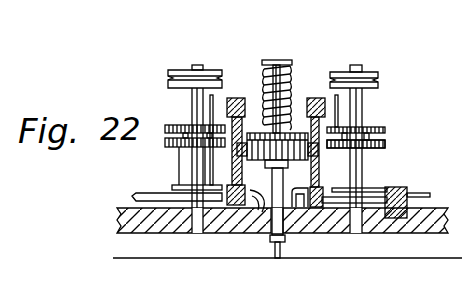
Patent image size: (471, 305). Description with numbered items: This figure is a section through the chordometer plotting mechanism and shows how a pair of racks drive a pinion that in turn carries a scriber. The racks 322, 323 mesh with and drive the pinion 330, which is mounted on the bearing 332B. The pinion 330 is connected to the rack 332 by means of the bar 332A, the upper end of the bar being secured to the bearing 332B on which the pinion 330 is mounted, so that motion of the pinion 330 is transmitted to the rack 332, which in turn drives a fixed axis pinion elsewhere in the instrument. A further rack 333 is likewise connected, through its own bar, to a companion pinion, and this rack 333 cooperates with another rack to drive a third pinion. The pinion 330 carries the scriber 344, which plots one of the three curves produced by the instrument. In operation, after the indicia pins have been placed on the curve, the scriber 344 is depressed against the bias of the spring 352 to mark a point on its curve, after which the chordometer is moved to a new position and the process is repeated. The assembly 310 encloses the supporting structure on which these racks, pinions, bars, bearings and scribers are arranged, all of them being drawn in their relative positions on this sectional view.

The pulley drive assembly 310 is at (385, 128).
The rack 322 is at (385, 147).
The rack 323 is at (240, 152).
The pinion 330 is at (291, 130).
The rack 332 is at (396, 192).
The bar 332A is at (298, 208).
The bearing 332B is at (243, 169).
The rack 333 is at (262, 212).
The scriber 344 is at (287, 247).
The spring 352 is at (266, 84).